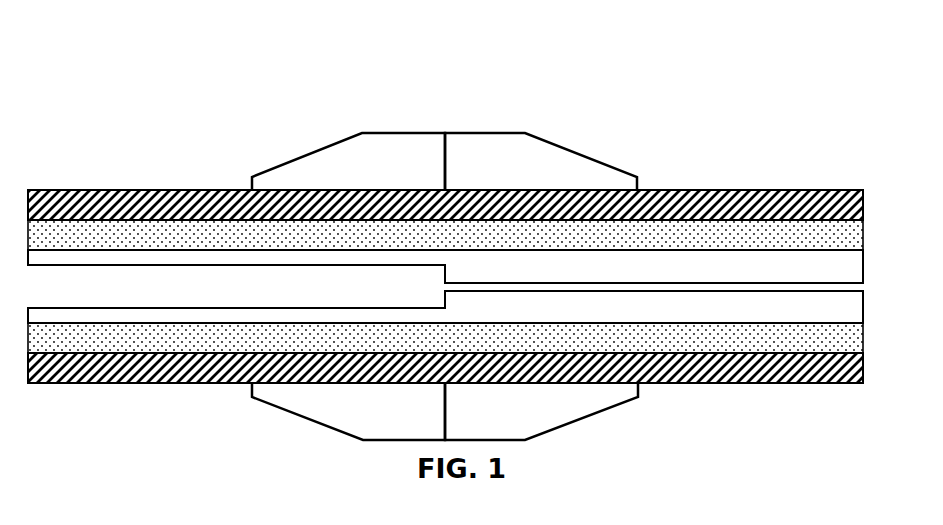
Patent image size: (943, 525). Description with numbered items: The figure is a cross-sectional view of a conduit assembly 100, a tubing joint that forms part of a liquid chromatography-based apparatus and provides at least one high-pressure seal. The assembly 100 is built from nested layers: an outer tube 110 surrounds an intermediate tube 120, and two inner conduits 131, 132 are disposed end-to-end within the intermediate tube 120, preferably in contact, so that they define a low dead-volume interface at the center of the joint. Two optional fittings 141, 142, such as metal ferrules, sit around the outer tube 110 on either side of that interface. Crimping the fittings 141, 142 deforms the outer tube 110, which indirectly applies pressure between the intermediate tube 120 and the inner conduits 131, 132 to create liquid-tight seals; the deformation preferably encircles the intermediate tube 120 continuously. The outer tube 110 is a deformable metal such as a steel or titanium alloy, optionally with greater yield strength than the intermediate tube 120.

The conduit assembly 100 is at (268, 100).
The outer tube 110 is at (677, 192).
The intermediate tube 120 is at (302, 246).
The inner conduit 131 is at (77, 303).
The inner conduit 132 is at (557, 276).
The fitting 141 is at (363, 177).
The fitting 142 is at (476, 177).